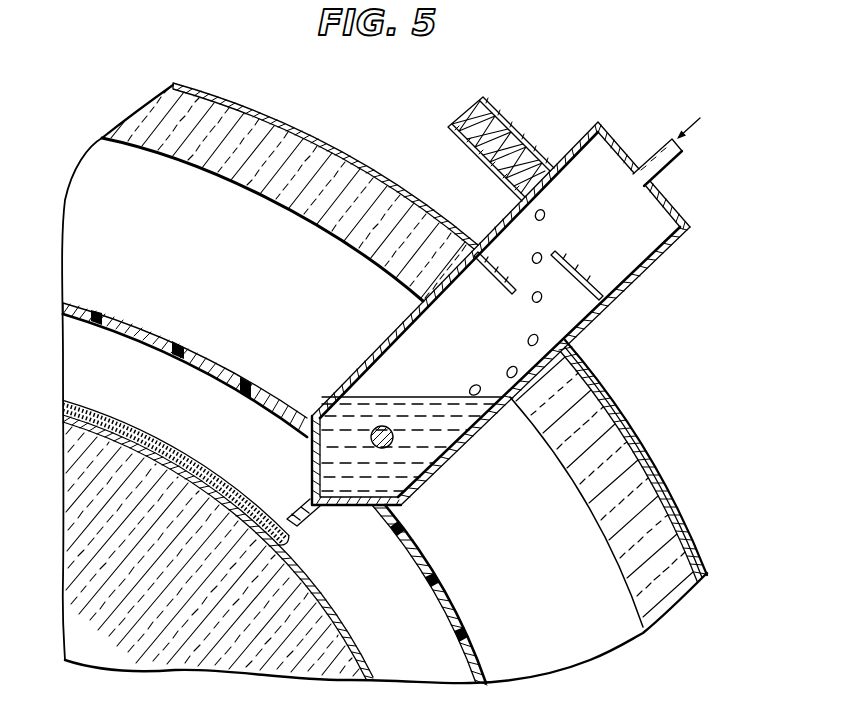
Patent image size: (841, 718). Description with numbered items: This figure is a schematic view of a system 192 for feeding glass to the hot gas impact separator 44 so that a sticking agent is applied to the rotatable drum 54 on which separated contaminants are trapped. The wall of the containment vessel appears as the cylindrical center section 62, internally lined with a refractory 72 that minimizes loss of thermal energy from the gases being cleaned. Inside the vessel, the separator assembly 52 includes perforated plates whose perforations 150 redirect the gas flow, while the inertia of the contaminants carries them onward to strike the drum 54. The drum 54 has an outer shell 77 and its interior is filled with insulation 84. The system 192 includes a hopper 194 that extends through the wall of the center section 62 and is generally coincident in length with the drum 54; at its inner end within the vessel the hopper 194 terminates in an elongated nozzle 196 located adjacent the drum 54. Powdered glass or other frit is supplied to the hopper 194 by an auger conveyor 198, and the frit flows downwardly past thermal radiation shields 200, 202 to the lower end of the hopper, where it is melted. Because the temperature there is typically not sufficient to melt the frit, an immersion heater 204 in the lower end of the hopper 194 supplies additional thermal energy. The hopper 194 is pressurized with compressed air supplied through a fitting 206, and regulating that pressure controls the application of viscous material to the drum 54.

The hot gas impact separator 44 is at (203, 60).
The refractory 72 is at (231, 122).
The cylindrical center section 62 is at (338, 158).
The separator assembly 52 is at (175, 303).
The perforations 150 is at (113, 308).
The outer shell 77 is at (88, 403).
The rotatable drum 54 is at (143, 420).
The insulation 84 is at (213, 524).
The system for applying adhesive material 192 is at (562, 108).
The hopper 194 is at (660, 257).
The fitting 206 is at (663, 140).
The auger conveyor 198 is at (498, 106).
The thermal radiation shield 200 is at (557, 254).
The thermal radiation shield 202 is at (512, 293).
The immersion heater 204 is at (377, 429).
The elongated nozzle 196 is at (300, 500).